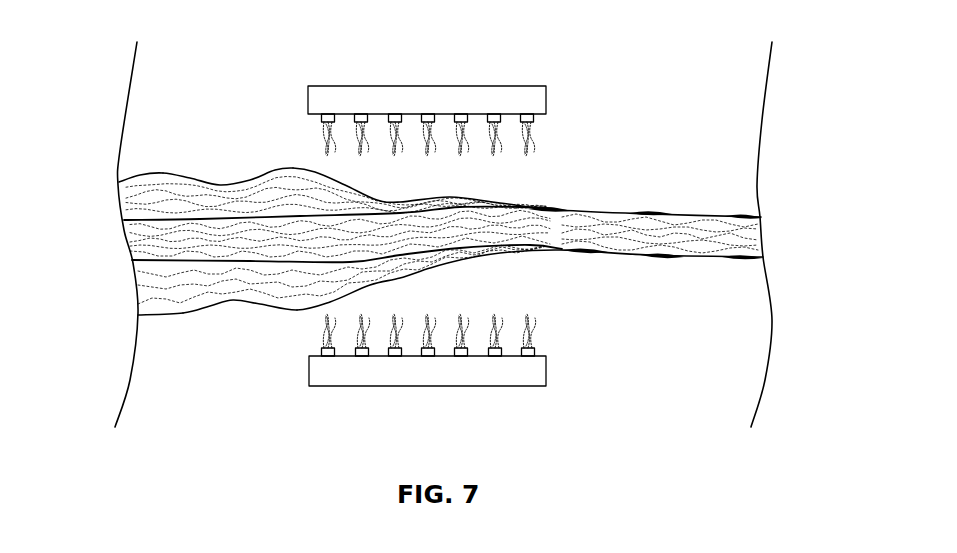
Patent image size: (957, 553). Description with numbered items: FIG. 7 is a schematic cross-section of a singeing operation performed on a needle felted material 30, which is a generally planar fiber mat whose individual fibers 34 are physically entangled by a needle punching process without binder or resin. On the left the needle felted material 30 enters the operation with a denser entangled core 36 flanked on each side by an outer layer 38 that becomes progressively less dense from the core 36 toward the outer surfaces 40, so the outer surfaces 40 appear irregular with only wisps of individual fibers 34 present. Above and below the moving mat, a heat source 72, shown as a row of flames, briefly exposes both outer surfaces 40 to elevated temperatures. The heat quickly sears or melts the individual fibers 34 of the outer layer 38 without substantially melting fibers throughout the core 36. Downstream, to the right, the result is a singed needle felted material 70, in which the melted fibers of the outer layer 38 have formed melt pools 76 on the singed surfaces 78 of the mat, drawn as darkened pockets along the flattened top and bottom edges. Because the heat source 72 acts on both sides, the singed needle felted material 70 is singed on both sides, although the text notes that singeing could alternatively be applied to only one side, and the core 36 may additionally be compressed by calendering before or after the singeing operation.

The needle felted material 30 is at (108, 122).
The individual fibers 34 is at (197, 192).
The core 36 is at (142, 237).
The outer layer 38 is at (130, 191).
The outer surfaces 40 is at (238, 185).
The singed needle felted material 70 is at (665, 90).
The heat source 72 is at (518, 86).
The melt pools 76 is at (648, 213).
The singed surfaces 78 is at (600, 210).